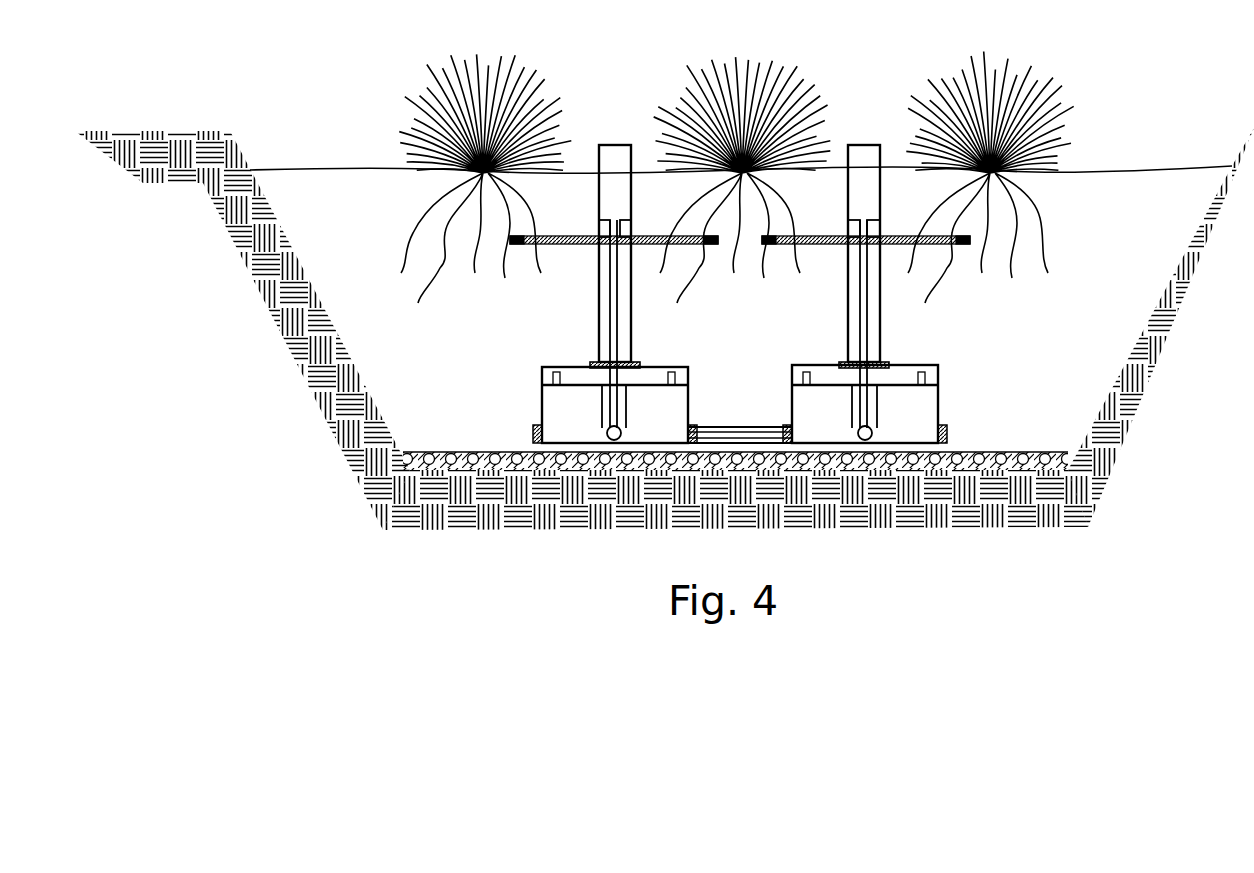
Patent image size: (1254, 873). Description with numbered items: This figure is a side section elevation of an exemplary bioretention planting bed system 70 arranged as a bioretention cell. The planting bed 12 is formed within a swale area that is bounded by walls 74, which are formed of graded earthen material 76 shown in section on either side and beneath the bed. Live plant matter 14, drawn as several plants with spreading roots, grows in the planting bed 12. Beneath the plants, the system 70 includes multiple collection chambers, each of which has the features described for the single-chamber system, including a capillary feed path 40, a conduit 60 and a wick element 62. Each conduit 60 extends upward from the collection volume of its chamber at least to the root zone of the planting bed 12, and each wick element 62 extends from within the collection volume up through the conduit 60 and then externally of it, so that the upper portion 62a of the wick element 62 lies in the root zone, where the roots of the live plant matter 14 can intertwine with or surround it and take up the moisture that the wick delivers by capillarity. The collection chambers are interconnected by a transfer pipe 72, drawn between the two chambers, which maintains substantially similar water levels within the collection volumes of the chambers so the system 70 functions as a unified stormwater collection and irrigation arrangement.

The planting bed 12 is at (370, 184).
The live plant matter 14 is at (532, 66).
The capillary feed path 40 is at (921, 355).
The conduit 60 is at (601, 135).
The wick element 62 is at (630, 405).
The upper portion of the wick element 62a is at (893, 232).
The bioretention planting bed system 70 is at (1140, 98).
The transfer pipe 72 is at (746, 412).
The wall 74 is at (320, 316).
The graded earthen material 76 is at (334, 437).